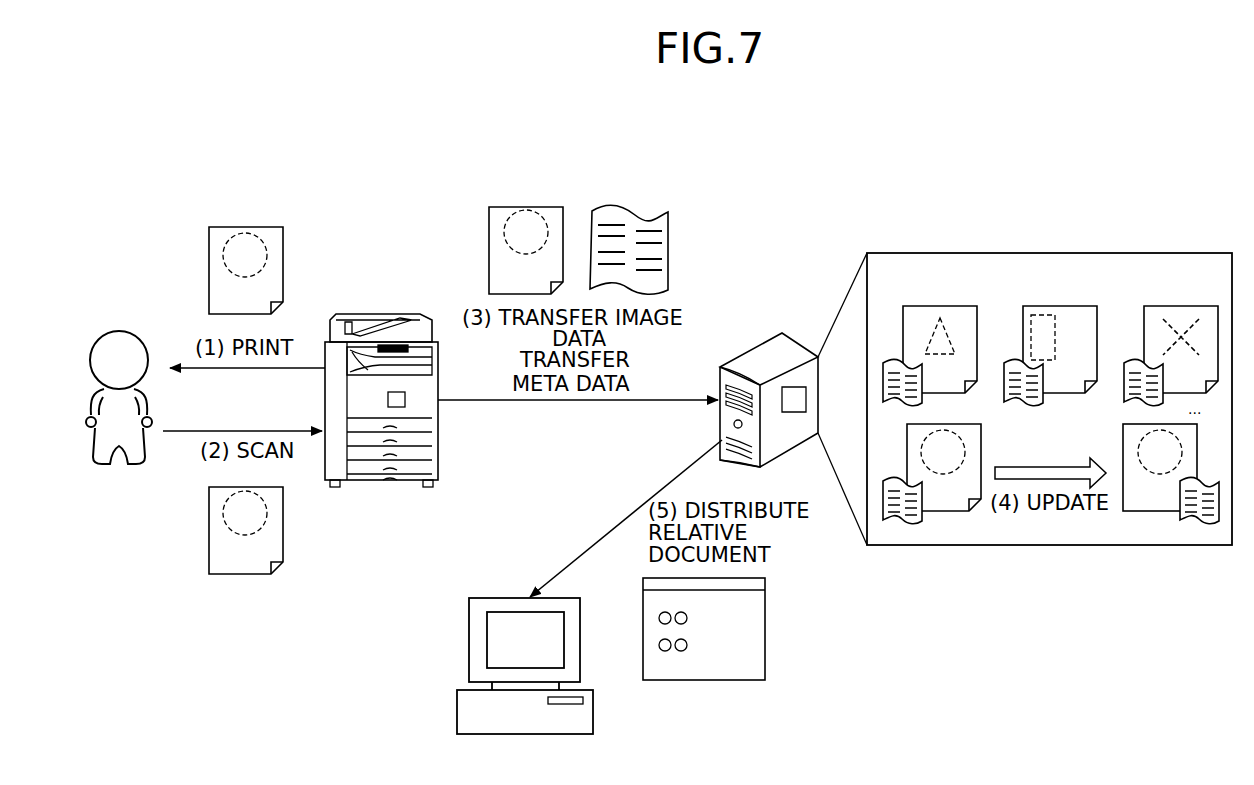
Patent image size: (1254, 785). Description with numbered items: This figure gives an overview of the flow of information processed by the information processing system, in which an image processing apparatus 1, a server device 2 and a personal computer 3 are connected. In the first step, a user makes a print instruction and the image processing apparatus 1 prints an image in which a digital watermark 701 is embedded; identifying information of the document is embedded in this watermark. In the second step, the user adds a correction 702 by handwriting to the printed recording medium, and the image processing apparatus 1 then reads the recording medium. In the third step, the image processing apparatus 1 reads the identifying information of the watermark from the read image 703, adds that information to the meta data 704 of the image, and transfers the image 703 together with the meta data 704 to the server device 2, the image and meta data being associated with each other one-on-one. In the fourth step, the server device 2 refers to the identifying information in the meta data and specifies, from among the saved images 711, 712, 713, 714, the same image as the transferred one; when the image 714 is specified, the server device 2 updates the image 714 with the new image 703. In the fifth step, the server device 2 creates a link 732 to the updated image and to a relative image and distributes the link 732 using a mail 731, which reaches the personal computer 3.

The image processing apparatus 1 is at (382, 315).
The server device 2 is at (788, 333).
The personal computer (PC) 3 is at (500, 598).
The digital watermark 701 is at (245, 227).
The correction 702 is at (237, 574).
The read image 703 is at (526, 207).
The meta data 704 is at (630, 208).
The image 711 is at (940, 306).
The image 712 is at (1060, 306).
The image 713 is at (1181, 306).
The image 714 is at (943, 511).
The mail 731 is at (766, 607).
The link 732 is at (703, 655).